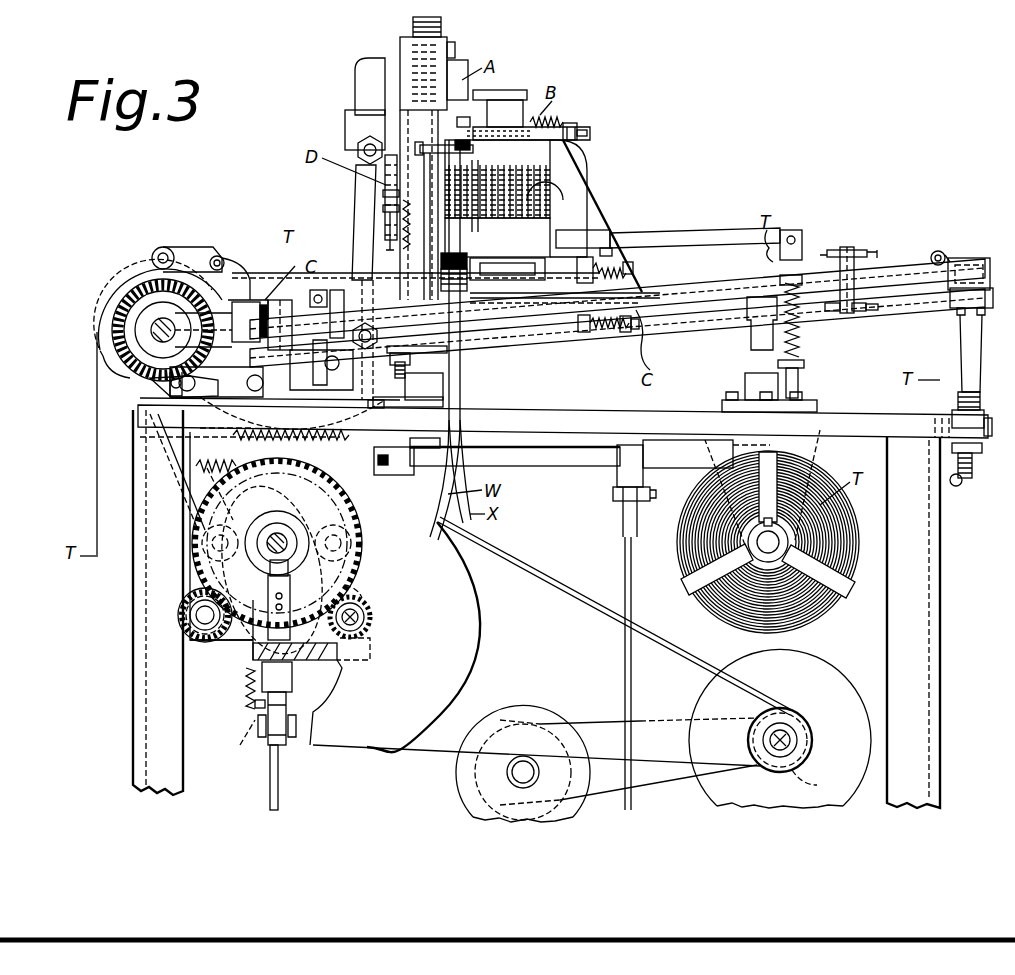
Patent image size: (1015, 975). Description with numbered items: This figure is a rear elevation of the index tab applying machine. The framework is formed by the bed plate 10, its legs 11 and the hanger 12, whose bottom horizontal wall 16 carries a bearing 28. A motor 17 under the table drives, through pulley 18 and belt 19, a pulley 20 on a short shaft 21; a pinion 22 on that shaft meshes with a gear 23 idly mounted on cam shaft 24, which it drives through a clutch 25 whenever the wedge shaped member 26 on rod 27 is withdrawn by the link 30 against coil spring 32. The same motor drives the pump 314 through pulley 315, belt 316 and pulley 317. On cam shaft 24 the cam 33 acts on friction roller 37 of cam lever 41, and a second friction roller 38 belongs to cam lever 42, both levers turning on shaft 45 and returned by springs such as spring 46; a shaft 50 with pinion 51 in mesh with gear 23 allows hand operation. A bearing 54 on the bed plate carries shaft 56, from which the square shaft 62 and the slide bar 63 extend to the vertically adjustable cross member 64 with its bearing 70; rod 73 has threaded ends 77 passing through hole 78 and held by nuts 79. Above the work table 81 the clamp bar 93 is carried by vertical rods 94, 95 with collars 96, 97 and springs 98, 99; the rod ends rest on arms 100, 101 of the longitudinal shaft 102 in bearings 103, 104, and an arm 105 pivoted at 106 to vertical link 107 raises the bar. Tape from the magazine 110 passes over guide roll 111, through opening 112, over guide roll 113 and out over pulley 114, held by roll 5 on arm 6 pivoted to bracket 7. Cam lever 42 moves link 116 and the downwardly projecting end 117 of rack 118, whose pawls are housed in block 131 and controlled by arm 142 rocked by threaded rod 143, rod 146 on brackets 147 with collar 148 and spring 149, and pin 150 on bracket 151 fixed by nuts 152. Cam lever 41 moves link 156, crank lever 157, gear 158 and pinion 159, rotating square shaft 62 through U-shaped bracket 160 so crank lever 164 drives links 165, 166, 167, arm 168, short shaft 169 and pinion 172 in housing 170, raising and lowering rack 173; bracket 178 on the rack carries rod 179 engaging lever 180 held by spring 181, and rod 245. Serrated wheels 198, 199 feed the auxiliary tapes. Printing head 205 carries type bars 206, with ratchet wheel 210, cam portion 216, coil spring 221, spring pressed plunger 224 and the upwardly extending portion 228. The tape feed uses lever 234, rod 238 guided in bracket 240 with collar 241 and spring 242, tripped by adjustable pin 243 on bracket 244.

The roll 5 is at (163, 248).
The arm 6 is at (190, 250).
The bracket 7 is at (238, 290).
The bed plate 10 is at (600, 425).
The legs 11 is at (150, 553).
The hanger 12 is at (358, 510).
The bottom horizontal wall 16 is at (325, 700).
The motor 17 is at (825, 672).
The pulley 18 is at (787, 722).
The belt 19 is at (532, 570).
The pulley 20 is at (483, 617).
The short shaft 21 is at (358, 617).
The pinion 22 is at (360, 600).
The gear 23 is at (362, 586).
The cam shaft 24 is at (280, 535).
The clutch 25 is at (255, 535).
The wedge shaped member 26 is at (290, 595).
The rod 27 is at (292, 712).
The bearing 28 is at (255, 672).
The link 30 is at (278, 778).
The coil spring 32 is at (242, 702).
The cam 33 is at (350, 530).
The friction roller 37 is at (200, 520).
The friction roller 38 is at (352, 545).
The cam lever 41 is at (220, 468).
The cam lever 42 is at (372, 470).
The shaft 45 is at (259, 734).
The spring 46 is at (313, 386).
The shaft 50 is at (185, 628).
The pinion 51 is at (185, 612).
The bearing 54 is at (175, 347).
The shaft 56 is at (150, 330).
The square shaft 62 is at (700, 306).
The slide bar 63 is at (686, 310).
The cross member 64 is at (952, 304).
The bearing 70 is at (970, 268).
The rod 73 is at (965, 355).
The threaded ends 77 is at (966, 478).
The hole 78 is at (986, 420).
The nuts 79 is at (958, 416).
The table 81 is at (700, 290).
The clamp bar 93 is at (700, 235).
The vertical rod 94 is at (798, 385).
The vertical rod 95 is at (443, 388).
The collar 96 is at (804, 364).
The collar 97 is at (410, 358).
The spring 98 is at (802, 340).
The spring 99 is at (447, 350).
The arm 100 is at (795, 445).
The arm 101 is at (426, 441).
The longitudinal shaft 102 is at (527, 458).
The bearing 103 is at (367, 403).
The bearing 104 is at (825, 455).
The arm 105 is at (622, 466).
The pivot 106 is at (613, 494).
The vertical link 107 is at (625, 568).
The magazine 110 is at (730, 448).
The guide roll 111 is at (952, 484).
The opening 112 is at (940, 430).
The guide roll 113 is at (936, 251).
The pulley 114 is at (125, 288).
The link 116 is at (240, 422).
The downwardly projecting end 117 is at (215, 387).
The rack 118 is at (247, 322).
The block 131 is at (320, 438).
The arm 142 is at (300, 368).
The threaded rod 143 is at (300, 340).
The rod 146 is at (567, 335).
The brackets 147 is at (584, 332).
The collar 148 is at (638, 332).
The spring 149 is at (622, 333).
The pin 150 is at (832, 309).
The bracket 151 is at (862, 311).
The nuts 152 is at (878, 307).
The link 156 is at (200, 390).
The crank lever 157 is at (170, 383).
The gear 158 is at (125, 312).
The pinion 159 is at (235, 300).
The U-shaped bracket 160 is at (343, 311).
The crank lever 164 is at (399, 393).
The link 165 is at (405, 370).
The link 166 is at (400, 178).
The link 167 is at (352, 140).
The arm 168 is at (360, 105).
The short shaft 169 is at (358, 72).
The housing 170 is at (408, 40).
The pinion 172 is at (440, 70).
The rack 173 is at (441, 28).
The bracket 178 is at (478, 150).
The rod 179 is at (448, 147).
The lever 180 is at (383, 193).
The spring 181 is at (383, 208).
The serrated wheel 198 is at (505, 265).
The serrated wheel 199 is at (463, 263).
The printing head 205 is at (595, 232).
The type bars 206 is at (565, 190).
The ratchet wheel 210 is at (548, 116).
The cam portion 216 is at (522, 108).
The coil spring 221 is at (577, 125).
The spring pressed plunger 224 is at (588, 133).
The upwardly extending portion 228 is at (465, 116).
The lever 234 is at (565, 290).
The rod 238 is at (555, 291).
The bracket 240 is at (582, 262).
The collar 241 is at (630, 266).
The spring 242 is at (605, 255).
The adjustable pin 243 is at (828, 252).
The bracket 244 is at (850, 250).
The rod 245 is at (497, 237).
The pump 314 is at (517, 710).
The pulley 315 is at (814, 774).
The belt 316 is at (668, 720).
The pulley 317 is at (545, 730).